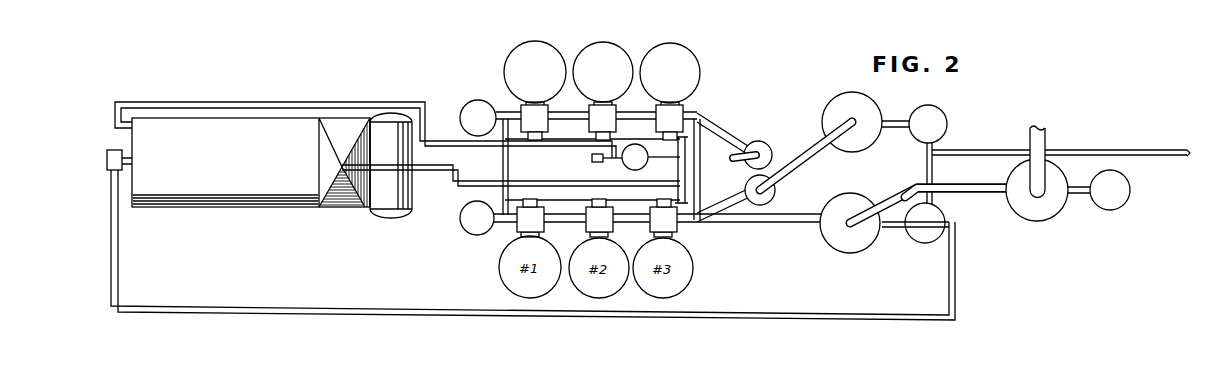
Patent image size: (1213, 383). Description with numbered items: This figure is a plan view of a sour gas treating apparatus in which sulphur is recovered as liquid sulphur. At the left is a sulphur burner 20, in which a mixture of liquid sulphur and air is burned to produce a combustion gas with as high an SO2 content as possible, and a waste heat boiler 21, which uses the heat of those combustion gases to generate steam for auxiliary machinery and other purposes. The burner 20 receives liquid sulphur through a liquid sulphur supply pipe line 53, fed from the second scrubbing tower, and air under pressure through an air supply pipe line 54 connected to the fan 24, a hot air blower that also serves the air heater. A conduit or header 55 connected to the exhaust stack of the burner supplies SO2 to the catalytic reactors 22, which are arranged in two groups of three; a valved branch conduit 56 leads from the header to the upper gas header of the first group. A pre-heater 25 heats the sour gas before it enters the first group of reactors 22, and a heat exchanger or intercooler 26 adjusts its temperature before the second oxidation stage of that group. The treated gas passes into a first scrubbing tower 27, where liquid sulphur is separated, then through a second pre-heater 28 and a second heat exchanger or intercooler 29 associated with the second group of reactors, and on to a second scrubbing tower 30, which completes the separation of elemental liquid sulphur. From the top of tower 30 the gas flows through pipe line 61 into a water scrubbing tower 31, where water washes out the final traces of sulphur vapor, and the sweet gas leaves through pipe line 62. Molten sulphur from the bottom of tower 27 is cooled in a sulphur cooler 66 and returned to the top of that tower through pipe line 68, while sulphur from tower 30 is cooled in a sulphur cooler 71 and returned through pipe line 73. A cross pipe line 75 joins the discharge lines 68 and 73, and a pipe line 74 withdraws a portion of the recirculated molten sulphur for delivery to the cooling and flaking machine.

The sulphur burner 20 is at (210, 203).
The waste heat boiler 21 is at (381, 218).
The catalytic reactors 22 is at (588, 52).
The fan 24 is at (592, 159).
The pre-heater 25 is at (629, 168).
The heat exchanger or intercooler 26 is at (490, 98).
The first scrubbing tower 27 is at (861, 101).
The second pre-heater 28 is at (776, 194).
The second heat exchanger or intercooler 29 is at (468, 231).
The second scrubbing tower 30 is at (871, 199).
The water scrubbing tower 31 is at (1032, 214).
The liquid sulphur supply pipe line 53 is at (270, 309).
The air supply pipe line 54 is at (280, 104).
The conduit or header 55 is at (437, 171).
The valved branch conduit 56 is at (700, 154).
The pipe line 61 is at (967, 183).
The pipe line 62 is at (1043, 146).
The sulphur cooler 66 is at (941, 111).
The pipe line 68 is at (707, 190).
The sulphur cooler 71 is at (931, 240).
The pipe line 73 is at (894, 233).
The pipe line 74 is at (1082, 152).
The cross pipe line 75 is at (932, 180).